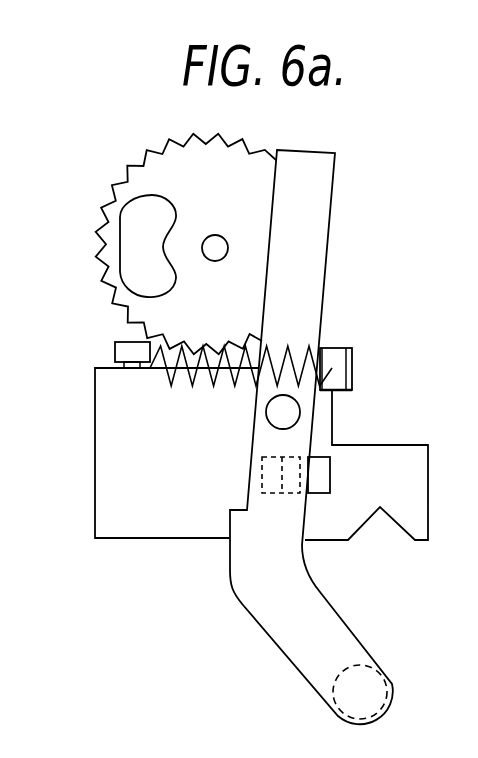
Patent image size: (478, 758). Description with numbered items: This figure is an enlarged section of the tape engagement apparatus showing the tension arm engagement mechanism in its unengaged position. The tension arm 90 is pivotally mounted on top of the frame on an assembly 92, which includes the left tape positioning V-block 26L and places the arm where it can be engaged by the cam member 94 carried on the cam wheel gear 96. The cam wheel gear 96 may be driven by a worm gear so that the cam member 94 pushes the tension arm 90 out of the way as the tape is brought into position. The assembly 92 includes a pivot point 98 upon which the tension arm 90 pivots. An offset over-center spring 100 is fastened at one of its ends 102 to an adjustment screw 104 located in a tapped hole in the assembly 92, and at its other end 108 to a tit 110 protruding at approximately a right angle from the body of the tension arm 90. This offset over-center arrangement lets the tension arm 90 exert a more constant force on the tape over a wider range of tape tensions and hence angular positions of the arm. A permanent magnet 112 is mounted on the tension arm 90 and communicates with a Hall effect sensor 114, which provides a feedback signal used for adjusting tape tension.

The tension arm 90 is at (333, 195).
The assembly 92 is at (95, 467).
The cam member 94 is at (135, 257).
The cam wheel gear 96 is at (170, 142).
The pivot point 98 is at (290, 412).
The offset over-center spring 100 is at (203, 387).
The end of spring 102 is at (152, 369).
The adjustment screw 104 is at (115, 353).
The other end of spring 108 is at (353, 367).
The tit 110 is at (322, 348).
The permanent magnet 112 is at (262, 475).
The Hall effect sensor 114 is at (330, 480).
The left tape positioning V-block 26L is at (392, 525).